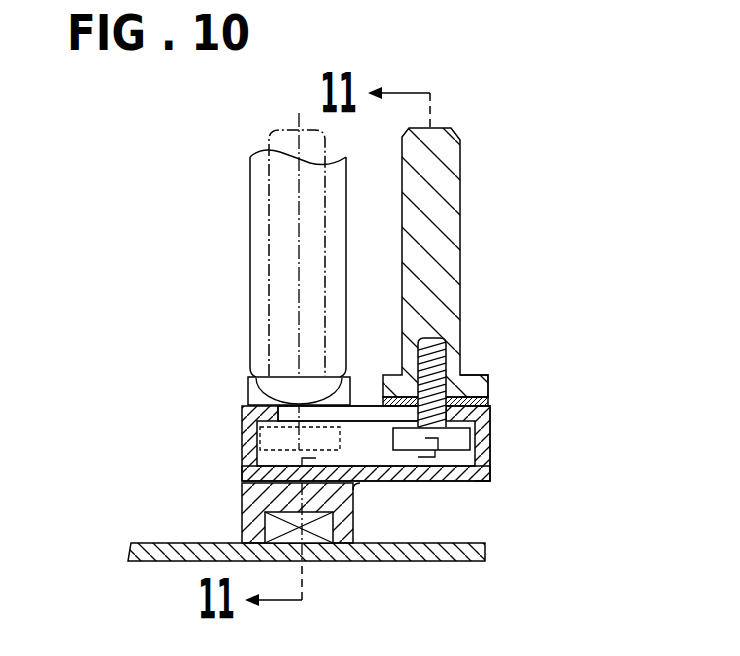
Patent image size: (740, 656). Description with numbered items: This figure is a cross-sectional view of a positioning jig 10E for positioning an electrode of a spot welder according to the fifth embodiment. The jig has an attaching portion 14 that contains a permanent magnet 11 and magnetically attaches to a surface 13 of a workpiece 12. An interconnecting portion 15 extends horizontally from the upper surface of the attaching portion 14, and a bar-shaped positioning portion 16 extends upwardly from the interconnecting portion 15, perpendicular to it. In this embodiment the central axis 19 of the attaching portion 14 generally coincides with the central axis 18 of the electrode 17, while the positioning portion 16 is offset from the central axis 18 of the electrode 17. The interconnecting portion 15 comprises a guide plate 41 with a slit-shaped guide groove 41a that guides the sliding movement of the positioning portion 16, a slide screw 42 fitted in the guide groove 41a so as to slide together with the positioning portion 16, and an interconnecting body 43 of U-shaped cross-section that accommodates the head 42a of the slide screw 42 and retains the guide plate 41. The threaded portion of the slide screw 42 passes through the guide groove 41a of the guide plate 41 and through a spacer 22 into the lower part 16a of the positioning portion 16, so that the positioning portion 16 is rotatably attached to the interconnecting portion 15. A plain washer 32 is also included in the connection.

The positioning jig 10E is at (525, 157).
The permanent magnet 11 is at (313, 552).
The workpiece 12 is at (467, 552).
The surface 13 is at (137, 540).
The attaching portion 14 is at (248, 503).
The interconnecting portion 15 is at (202, 402).
The positioning portion 16 is at (443, 193).
The lower part of positioning portion 16a is at (472, 385).
The electrode 17 is at (250, 292).
The central axis of electrode 18 is at (298, 221).
The central axis of attaching portion 19 is at (355, 561).
The spacer 22 is at (489, 401).
The plain washer 32 is at (490, 423).
The guide plate 41 is at (493, 406).
The guide groove 41a is at (362, 420).
The slide screw 42 is at (447, 368).
The head of slide screw 42a is at (488, 440).
The interconnecting body 43 is at (470, 481).